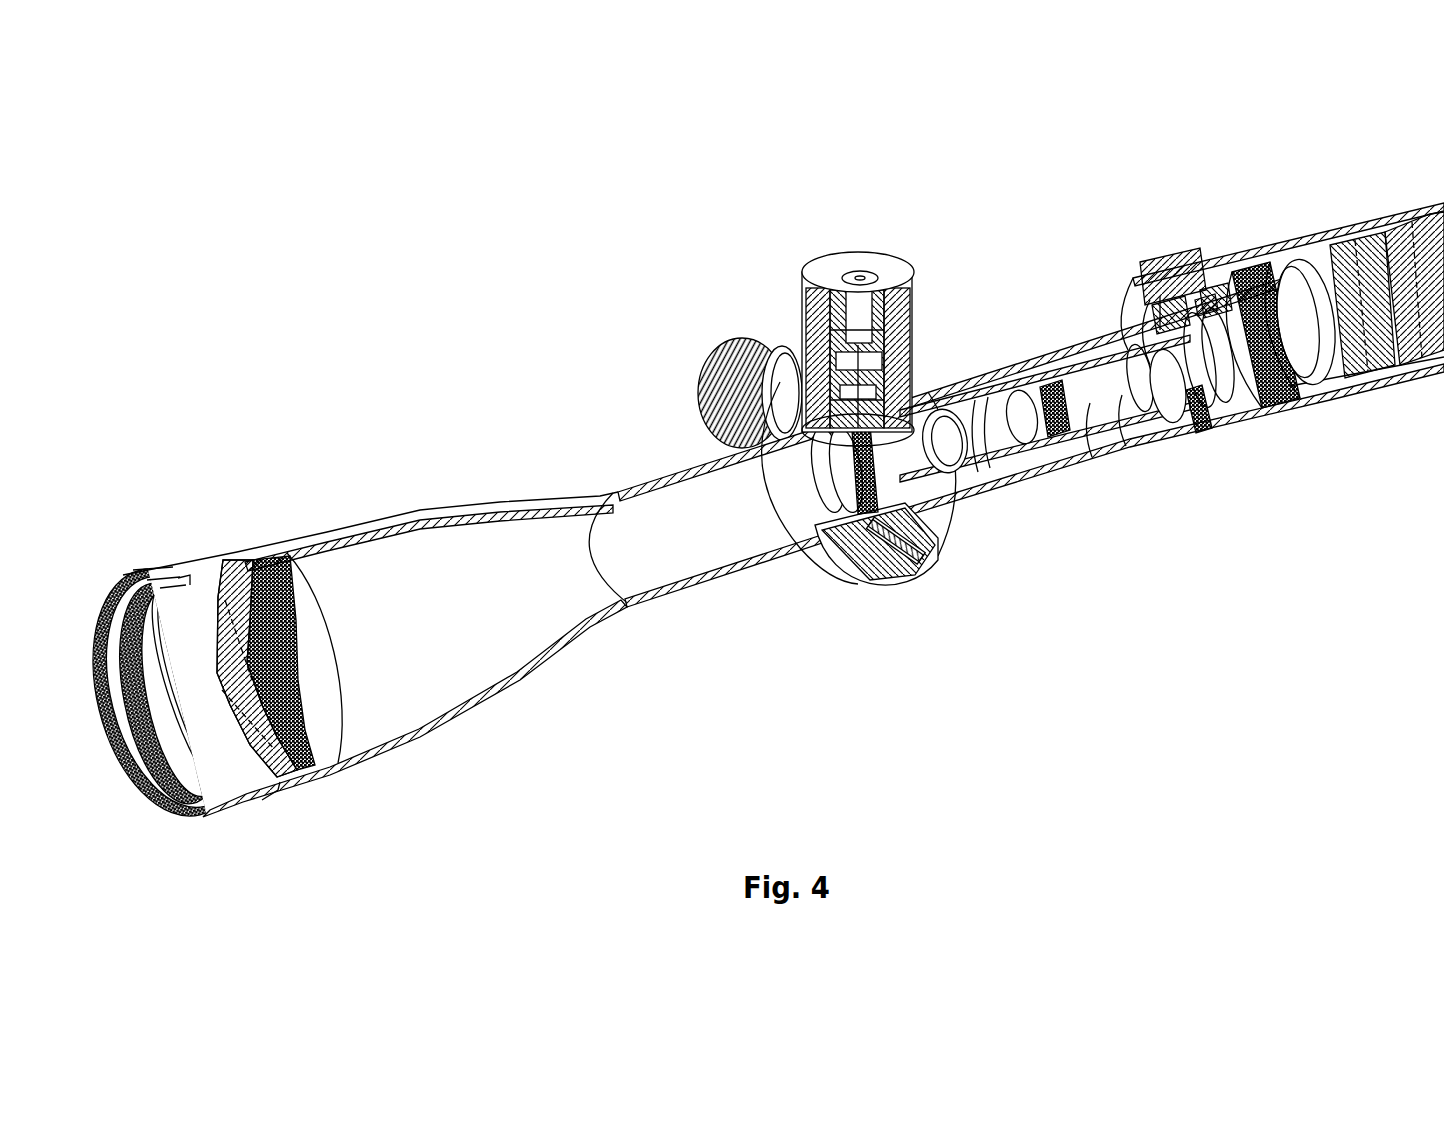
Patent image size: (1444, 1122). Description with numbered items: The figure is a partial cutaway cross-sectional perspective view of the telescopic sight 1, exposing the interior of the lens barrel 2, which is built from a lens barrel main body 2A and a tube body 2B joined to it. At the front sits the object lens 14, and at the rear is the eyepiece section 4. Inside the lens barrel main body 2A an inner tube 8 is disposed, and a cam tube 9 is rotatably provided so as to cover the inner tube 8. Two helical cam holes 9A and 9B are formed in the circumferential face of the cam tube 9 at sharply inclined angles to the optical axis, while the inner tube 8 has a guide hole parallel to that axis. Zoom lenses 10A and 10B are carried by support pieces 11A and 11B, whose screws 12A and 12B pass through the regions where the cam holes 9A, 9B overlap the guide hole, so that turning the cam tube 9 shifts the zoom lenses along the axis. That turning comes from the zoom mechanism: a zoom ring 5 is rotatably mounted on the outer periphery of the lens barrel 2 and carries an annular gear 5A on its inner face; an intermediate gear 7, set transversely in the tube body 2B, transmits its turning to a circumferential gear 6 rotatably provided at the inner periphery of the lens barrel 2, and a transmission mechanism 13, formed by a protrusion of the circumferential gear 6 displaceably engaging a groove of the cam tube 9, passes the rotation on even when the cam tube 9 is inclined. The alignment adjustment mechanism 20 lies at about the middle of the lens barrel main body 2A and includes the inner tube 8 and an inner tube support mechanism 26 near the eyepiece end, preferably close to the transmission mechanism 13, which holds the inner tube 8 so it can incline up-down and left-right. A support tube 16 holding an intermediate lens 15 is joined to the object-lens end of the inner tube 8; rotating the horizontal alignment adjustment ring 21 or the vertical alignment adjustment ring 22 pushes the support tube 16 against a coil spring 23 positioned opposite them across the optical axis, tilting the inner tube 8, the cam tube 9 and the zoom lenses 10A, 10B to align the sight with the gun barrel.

The telescopic sight 1 is at (723, 592).
The lens barrel 2 is at (680, 490).
The lens barrel main body 2A is at (640, 492).
The tube body 2B is at (1105, 330).
The eyepiece section 4 is at (1322, 232).
The zoom ring 5 is at (1185, 305).
The annular gear 5A is at (1200, 300).
The circumferential gear 6 is at (1215, 300).
The intermediate gear 7 is at (1145, 300).
The inner tube 8 is at (1030, 452).
The cam tube 9 is at (1073, 370).
The cam hole 9A is at (956, 375).
The cam hole 9B is at (1022, 367).
The zoom lens 10A is at (960, 465).
The zoom lens 10B is at (1090, 455).
The support piece 11A is at (1000, 470).
The support piece 11B is at (1125, 465).
The screw 12A is at (975, 370).
The screw 12B is at (1050, 373).
The transmission mechanism 13 is at (1165, 450).
The object lens 14 is at (231, 592).
The intermediate lens 15 is at (838, 503).
The support tube 16 is at (858, 498).
The alignment adjustment mechanism 20 is at (843, 240).
The horizontal alignment adjustment ring 21 is at (722, 362).
The vertical alignment adjustment ring 22 is at (800, 300).
The coil spring 23 is at (882, 568).
The inner tube support mechanism 26 is at (1250, 300).